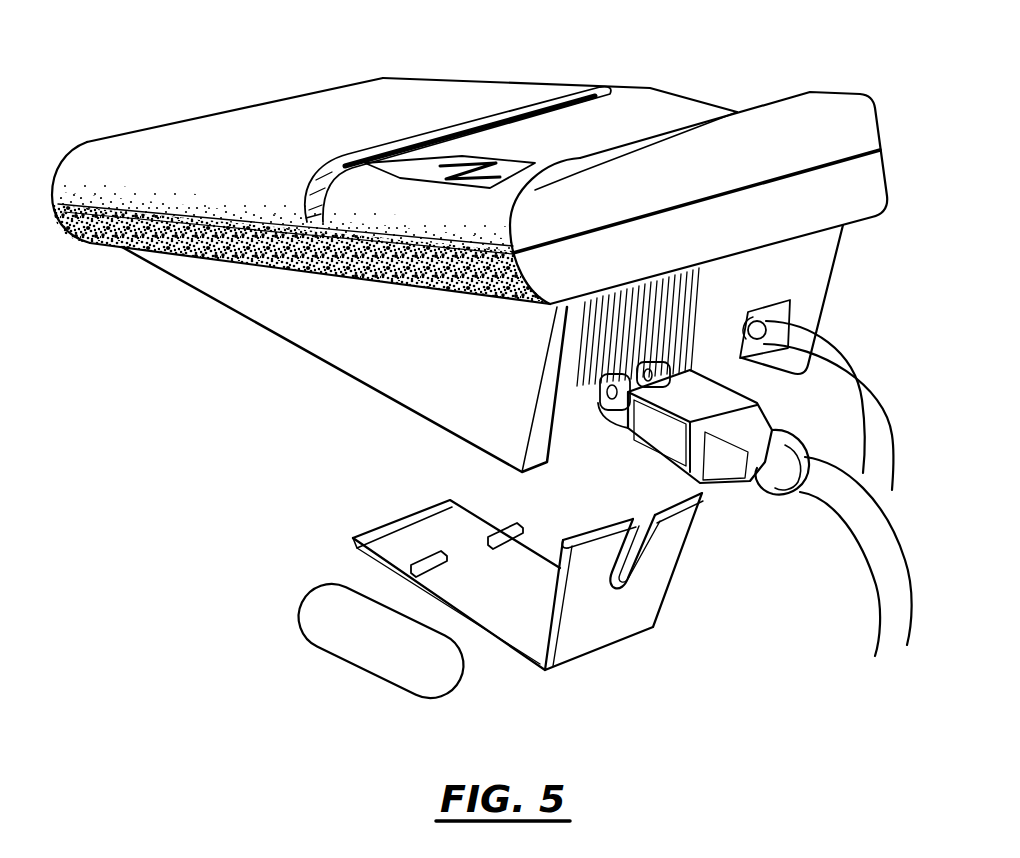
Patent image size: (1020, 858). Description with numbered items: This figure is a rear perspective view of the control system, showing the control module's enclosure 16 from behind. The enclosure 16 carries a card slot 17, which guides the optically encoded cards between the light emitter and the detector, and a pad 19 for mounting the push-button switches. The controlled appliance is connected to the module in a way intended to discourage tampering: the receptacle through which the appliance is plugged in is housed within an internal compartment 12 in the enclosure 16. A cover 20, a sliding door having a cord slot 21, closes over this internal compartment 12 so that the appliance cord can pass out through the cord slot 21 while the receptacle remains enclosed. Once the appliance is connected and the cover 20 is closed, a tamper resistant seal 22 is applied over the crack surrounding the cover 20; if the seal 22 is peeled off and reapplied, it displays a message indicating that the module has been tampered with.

The internal compartment 12 is at (575, 412).
The enclosure 16 is at (248, 130).
The card slot 17 is at (560, 103).
The pad 19 is at (433, 176).
The cover 20 is at (535, 579).
The cord slot 21 is at (617, 567).
The tamper resistant seal 22 is at (380, 650).